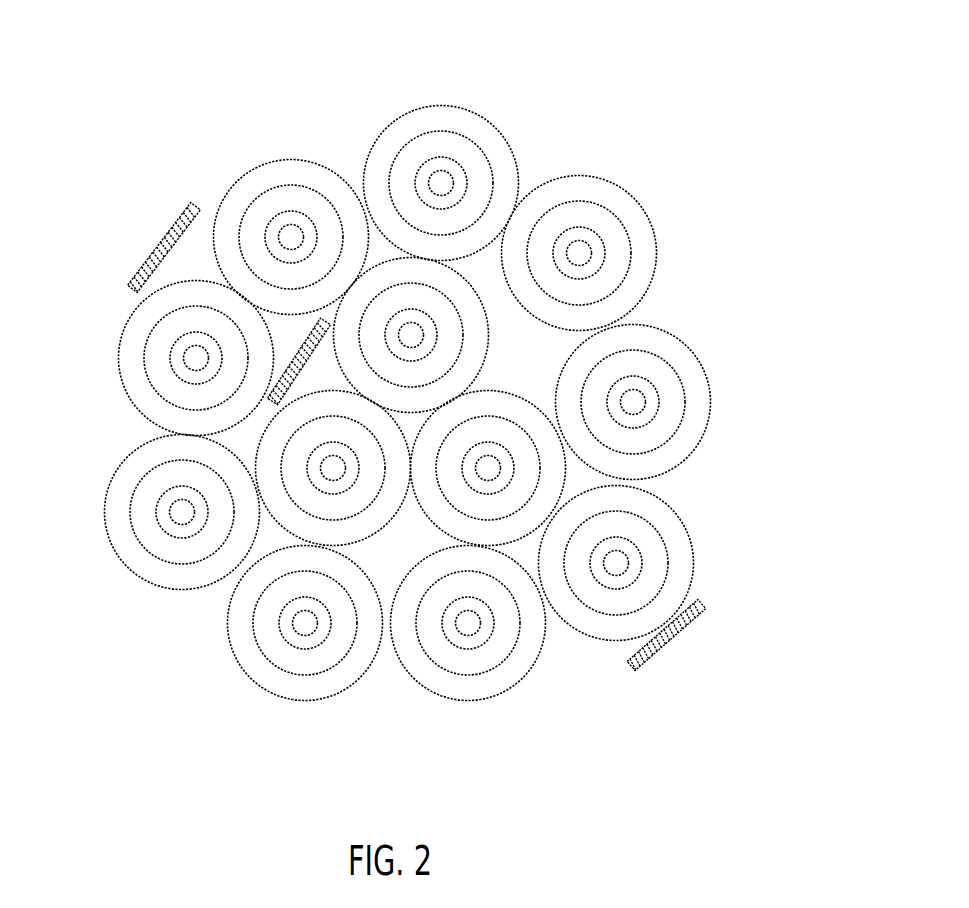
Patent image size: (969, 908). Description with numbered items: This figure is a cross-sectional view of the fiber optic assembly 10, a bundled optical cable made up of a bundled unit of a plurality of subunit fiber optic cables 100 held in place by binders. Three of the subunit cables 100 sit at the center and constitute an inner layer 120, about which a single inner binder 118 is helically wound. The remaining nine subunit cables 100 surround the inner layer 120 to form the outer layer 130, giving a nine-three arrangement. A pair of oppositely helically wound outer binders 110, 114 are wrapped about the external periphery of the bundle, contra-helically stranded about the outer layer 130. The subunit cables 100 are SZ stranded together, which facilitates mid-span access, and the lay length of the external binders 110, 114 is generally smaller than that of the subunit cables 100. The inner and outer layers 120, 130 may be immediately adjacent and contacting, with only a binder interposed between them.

The fiber optic assembly 10 is at (255, 120).
The subunit fiber optic cables 100 is at (665, 550).
The outer binder 110 is at (156, 250).
The outer binder 114 is at (663, 647).
The inner binder 118 is at (285, 362).
The inner layer 120 is at (502, 325).
The outer layer 130 is at (495, 108).